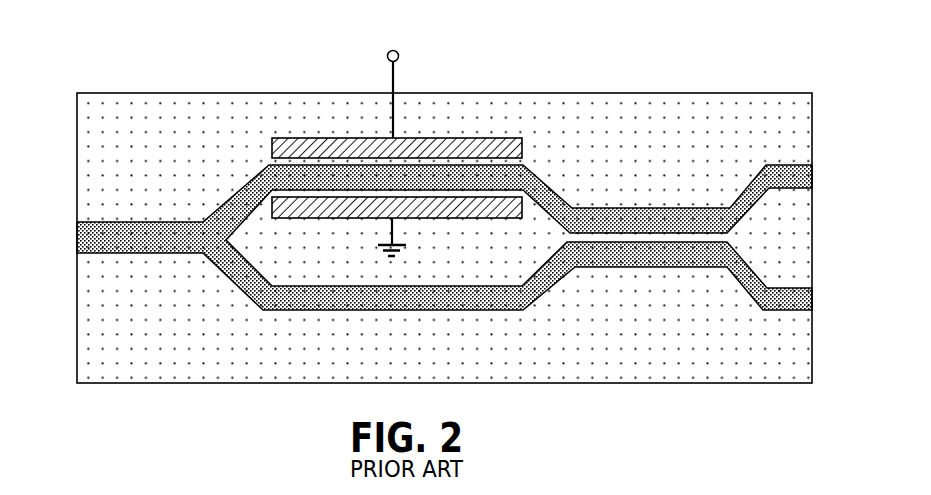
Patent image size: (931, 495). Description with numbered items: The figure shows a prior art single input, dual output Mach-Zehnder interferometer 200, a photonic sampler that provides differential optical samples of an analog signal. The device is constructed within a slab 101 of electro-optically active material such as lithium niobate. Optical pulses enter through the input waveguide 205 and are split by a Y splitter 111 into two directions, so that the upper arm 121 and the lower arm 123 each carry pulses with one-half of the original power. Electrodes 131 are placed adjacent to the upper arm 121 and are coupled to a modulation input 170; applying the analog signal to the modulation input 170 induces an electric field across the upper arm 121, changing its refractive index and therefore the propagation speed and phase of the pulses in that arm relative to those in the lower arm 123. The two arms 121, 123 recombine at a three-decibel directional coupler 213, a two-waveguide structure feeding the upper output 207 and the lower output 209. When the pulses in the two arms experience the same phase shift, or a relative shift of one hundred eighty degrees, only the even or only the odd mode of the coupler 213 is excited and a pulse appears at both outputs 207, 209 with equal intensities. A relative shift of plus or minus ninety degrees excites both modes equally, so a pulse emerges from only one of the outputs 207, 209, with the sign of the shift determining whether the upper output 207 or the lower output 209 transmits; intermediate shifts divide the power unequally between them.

The dual output Mach-Zehnder interferometer 200 is at (273, 62).
The slab of electro-optically active material 101 is at (618, 93).
The input waveguide 205 is at (75, 240).
The Y splitter 111 is at (200, 268).
The upper arm 121 is at (523, 164).
The lower arm 123 is at (400, 311).
The 3 dB directional coupler 213 is at (642, 190).
The upper output 207 is at (812, 177).
The lower output 209 is at (812, 297).
The electrodes 131 is at (307, 138).
The modulation input 170 is at (396, 80).